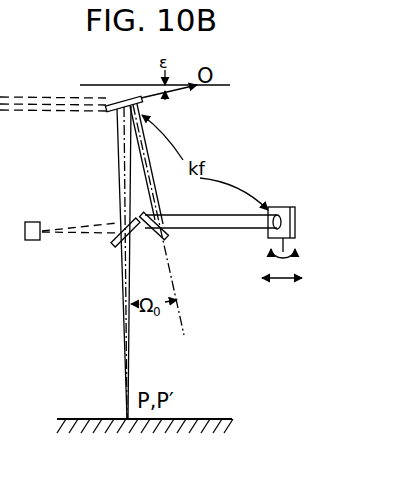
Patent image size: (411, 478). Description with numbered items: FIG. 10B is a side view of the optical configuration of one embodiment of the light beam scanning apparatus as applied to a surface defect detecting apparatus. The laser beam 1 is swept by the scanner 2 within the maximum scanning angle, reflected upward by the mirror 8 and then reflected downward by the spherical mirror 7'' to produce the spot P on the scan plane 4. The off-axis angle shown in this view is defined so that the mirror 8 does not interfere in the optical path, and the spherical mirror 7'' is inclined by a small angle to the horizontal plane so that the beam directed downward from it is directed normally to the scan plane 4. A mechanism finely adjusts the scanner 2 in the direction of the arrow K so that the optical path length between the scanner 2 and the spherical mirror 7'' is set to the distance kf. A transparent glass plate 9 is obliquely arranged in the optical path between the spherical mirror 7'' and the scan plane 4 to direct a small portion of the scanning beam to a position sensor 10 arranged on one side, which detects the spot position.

The laser beam 1 is at (244, 229).
The scanner 2 is at (285, 207).
The scan plane 4 is at (97, 419).
The deflecting mirror 7'' is at (114, 122).
The mirror 8 is at (167, 239).
The transparent glass plate 9 is at (113, 244).
The position sensor 10 is at (33, 222).